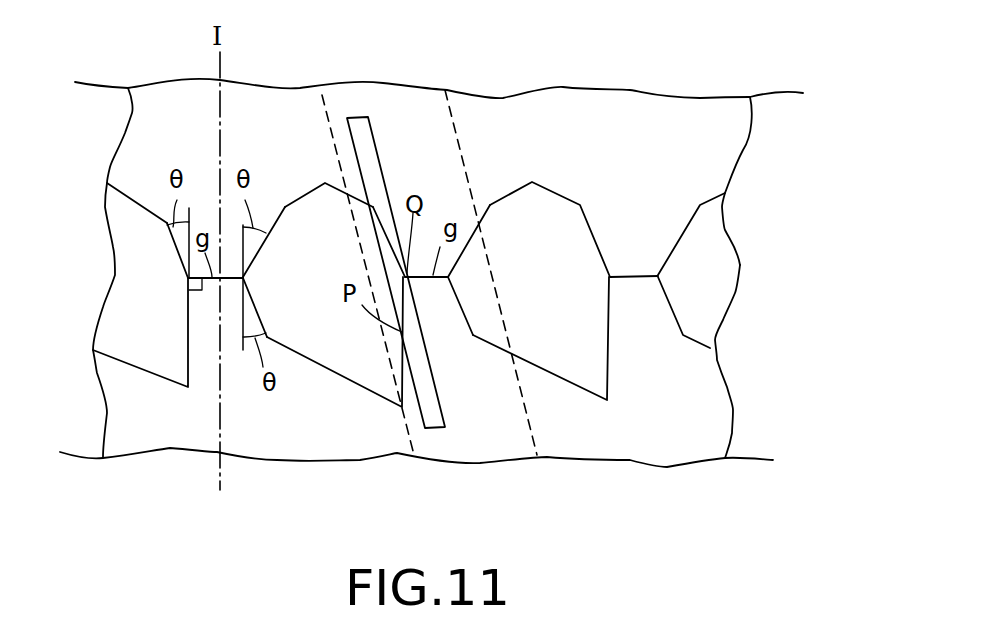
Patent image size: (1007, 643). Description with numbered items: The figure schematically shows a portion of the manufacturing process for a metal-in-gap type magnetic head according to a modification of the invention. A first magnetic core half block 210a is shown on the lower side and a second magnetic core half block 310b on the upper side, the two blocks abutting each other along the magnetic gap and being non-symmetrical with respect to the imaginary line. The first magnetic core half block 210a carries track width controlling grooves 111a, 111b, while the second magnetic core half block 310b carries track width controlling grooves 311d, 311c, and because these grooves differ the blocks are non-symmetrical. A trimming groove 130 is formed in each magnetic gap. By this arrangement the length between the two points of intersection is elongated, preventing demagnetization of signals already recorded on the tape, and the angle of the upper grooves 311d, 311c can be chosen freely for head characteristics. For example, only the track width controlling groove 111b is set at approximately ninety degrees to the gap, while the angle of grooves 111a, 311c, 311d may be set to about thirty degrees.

The second magnetic core half block 310b is at (715, 152).
The first magnetic core half block 210a is at (715, 435).
The track width controlling groove 311c is at (173, 247).
The track width controlling groove 311d is at (275, 217).
The track width controlling groove 111a is at (256, 308).
The track width controlling groove 111b is at (188, 320).
The trimming groove 130 is at (433, 403).